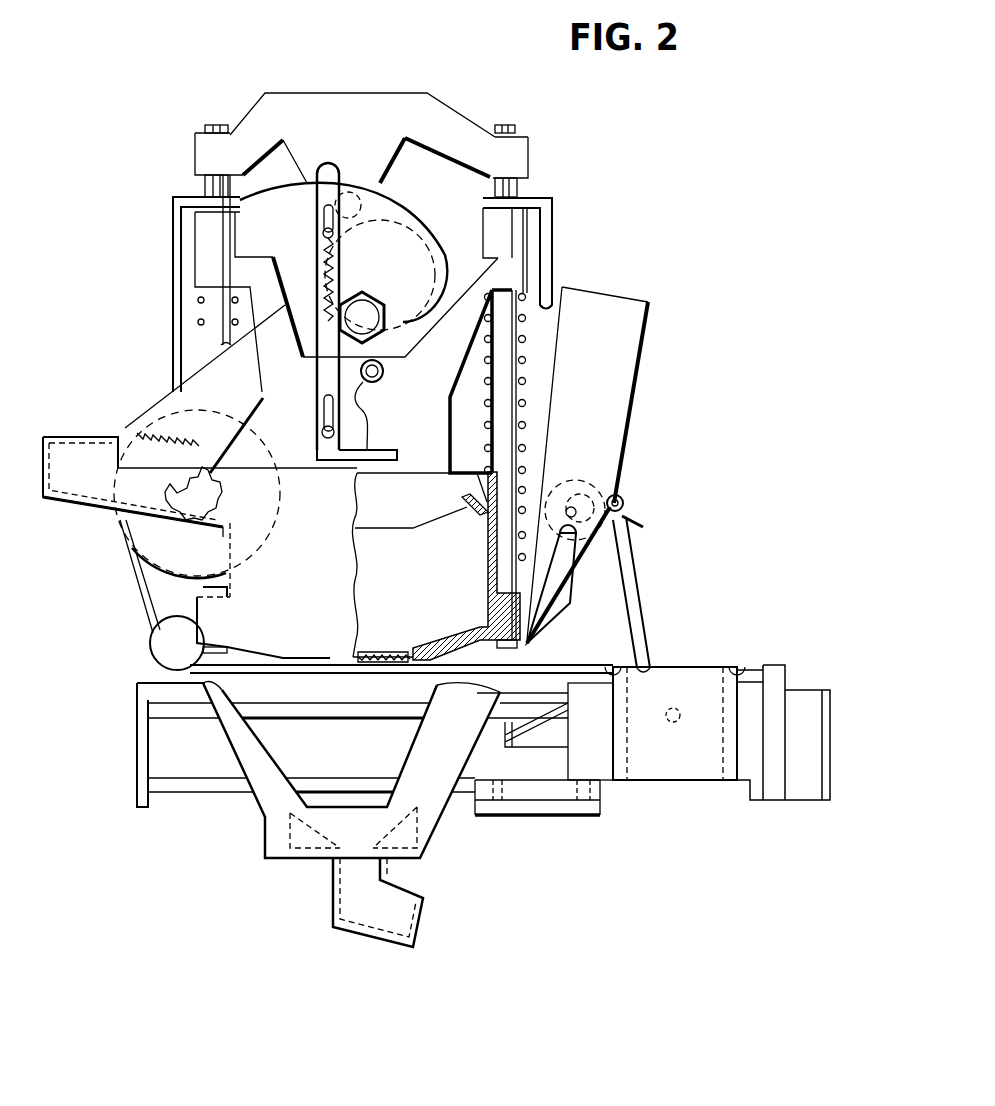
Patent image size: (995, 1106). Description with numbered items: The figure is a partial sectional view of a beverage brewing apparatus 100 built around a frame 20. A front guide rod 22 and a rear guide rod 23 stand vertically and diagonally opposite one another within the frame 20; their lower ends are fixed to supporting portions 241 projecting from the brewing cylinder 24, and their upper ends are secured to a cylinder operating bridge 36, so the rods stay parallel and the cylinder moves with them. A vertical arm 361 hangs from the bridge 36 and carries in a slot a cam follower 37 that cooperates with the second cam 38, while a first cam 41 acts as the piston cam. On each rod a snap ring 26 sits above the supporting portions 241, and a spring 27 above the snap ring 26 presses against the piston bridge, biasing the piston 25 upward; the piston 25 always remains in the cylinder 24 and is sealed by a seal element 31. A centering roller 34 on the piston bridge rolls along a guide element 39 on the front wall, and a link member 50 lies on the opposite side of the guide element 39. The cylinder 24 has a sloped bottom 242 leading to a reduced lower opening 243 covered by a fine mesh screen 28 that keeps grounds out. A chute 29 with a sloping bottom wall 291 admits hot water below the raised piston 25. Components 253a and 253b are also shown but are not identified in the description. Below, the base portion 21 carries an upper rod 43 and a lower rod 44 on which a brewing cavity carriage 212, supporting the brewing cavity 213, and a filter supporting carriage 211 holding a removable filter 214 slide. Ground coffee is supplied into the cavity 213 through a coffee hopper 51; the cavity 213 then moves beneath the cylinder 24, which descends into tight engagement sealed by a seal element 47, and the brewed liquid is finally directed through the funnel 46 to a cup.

The beverage brewing apparatus 100 is at (258, 84).
The cylinder operating bridge 36 is at (347, 103).
The vertical arm 361 is at (405, 170).
The front guide rod 22 is at (207, 185).
The rear guide rod 23 is at (520, 188).
The side plate 253b is at (200, 228).
The side plate 253a is at (527, 252).
The frame 20 is at (165, 276).
The cam follower 37 is at (404, 192).
The second cam 38 is at (433, 208).
The first cam 41 is at (432, 262).
The centering roller 34 is at (385, 373).
The guide element 39 is at (360, 431).
The link member 50 is at (317, 440).
The coffee hopper 51 is at (612, 387).
The spring 27 is at (491, 450).
The brewing cylinder 24 is at (503, 492).
The piston 25 is at (380, 491).
The seal element 31 is at (481, 508).
The chute 29 is at (66, 437).
The sloping bottom wall 291 is at (94, 508).
The supporting portions 241 is at (205, 628).
The lower opening 243 is at (392, 650).
The fine mesh screen 28 is at (373, 652).
The sloped bottom 242 is at (437, 647).
The snap ring 26 is at (555, 545).
The brewing cavity 213 is at (672, 678).
The seal element 47 is at (733, 667).
The brewing cavity carriage 212 is at (703, 786).
The upper rod 43 is at (158, 712).
The lower rod 44 is at (162, 786).
The funnel 46 is at (332, 903).
The base portion 21 is at (490, 820).
The filter supporting carriage 211 is at (535, 820).
The filter 214 is at (600, 812).